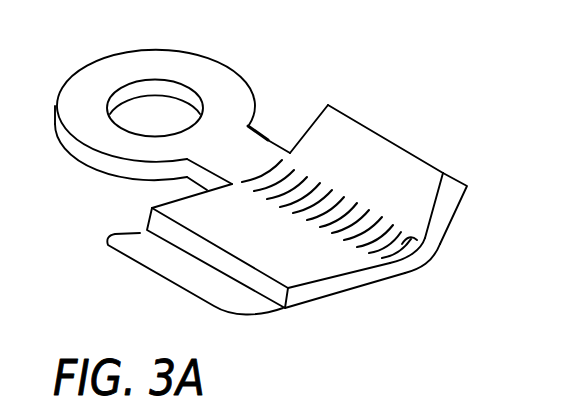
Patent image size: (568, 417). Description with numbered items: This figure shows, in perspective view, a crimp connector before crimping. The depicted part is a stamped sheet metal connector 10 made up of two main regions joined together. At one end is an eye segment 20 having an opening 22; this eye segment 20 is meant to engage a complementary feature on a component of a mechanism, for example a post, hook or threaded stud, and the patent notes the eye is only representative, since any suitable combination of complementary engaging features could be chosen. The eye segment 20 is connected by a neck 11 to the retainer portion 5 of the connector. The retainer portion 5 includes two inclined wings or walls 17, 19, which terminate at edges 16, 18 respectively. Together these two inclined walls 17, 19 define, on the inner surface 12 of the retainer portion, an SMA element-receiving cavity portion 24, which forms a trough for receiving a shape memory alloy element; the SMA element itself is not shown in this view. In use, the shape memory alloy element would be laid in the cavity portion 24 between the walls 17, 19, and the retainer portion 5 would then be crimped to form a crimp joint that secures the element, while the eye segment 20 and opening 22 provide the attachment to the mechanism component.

The stamped sheet metal connector 10 is at (362, 105).
The eye segment 20 is at (230, 69).
The opening 22 is at (140, 117).
The neck 11 is at (271, 142).
The inclined wall 17 is at (290, 253).
The edge 16 is at (256, 280).
The inclined wall 19 is at (395, 188).
The edge 18 is at (418, 158).
The inner surface 12 is at (432, 190).
The SMA element-receiving cavity portion 24 is at (422, 242).
The retainer portion 5 is at (166, 278).